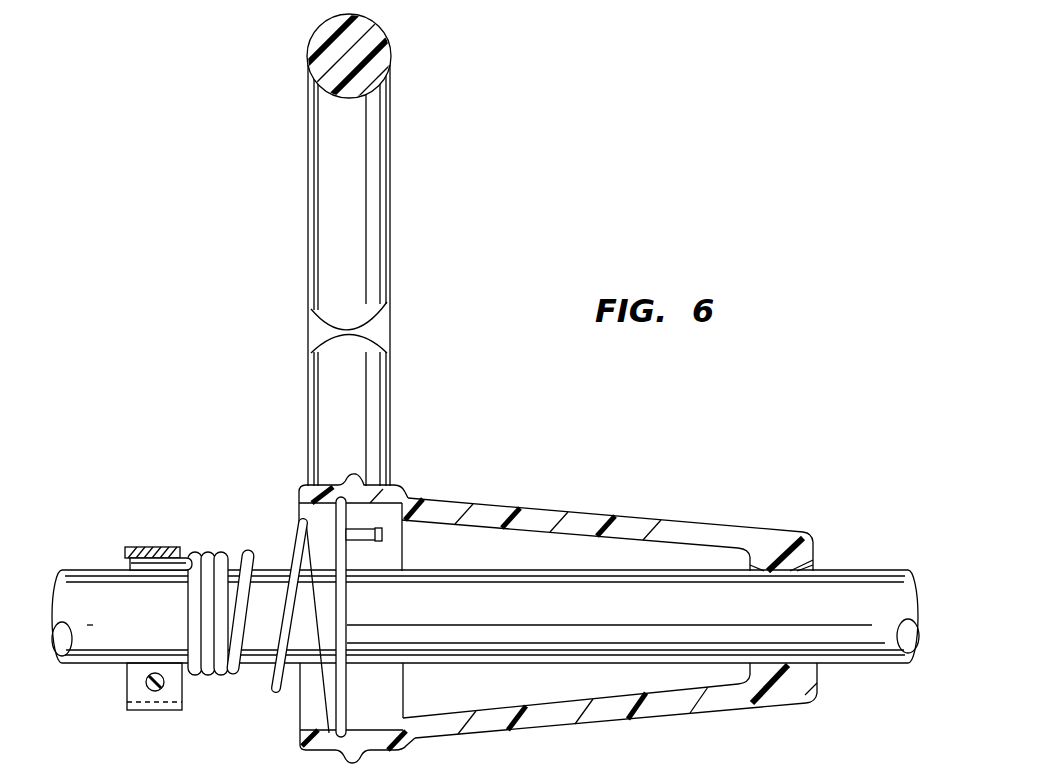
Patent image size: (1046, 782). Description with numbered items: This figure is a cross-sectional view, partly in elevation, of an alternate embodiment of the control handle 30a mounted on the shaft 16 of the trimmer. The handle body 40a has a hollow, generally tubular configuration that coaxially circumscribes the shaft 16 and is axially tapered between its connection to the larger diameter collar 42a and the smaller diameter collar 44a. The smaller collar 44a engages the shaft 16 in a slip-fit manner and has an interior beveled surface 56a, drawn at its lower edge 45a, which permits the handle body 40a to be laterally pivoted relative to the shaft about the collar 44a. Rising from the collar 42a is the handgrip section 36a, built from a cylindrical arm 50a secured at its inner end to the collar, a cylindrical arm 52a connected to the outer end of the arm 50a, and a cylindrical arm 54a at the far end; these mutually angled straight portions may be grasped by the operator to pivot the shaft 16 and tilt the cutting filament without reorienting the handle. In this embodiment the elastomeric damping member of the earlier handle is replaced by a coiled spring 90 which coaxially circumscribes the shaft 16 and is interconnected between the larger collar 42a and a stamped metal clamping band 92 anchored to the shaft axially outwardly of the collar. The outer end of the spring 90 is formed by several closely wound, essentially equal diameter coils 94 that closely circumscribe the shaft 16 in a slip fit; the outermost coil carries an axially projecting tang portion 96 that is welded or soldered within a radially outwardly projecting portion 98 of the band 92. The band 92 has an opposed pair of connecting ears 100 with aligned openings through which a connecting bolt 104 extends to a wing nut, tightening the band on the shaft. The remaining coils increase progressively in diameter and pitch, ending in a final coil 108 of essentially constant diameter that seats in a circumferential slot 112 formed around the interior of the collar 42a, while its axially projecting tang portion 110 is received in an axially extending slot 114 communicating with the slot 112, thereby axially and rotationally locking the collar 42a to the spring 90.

The shaft 16 is at (83, 570).
The control handle 30a is at (580, 588).
The handgrip section 36a is at (336, 243).
The handle body 40a is at (693, 514).
The larger diameter collar 42a is at (399, 497).
The smaller diameter collar 44a is at (785, 534).
The arm lower edge 45a is at (768, 572).
The cylindrical arm 50a is at (390, 441).
The cylindrical arm 52a is at (390, 215).
The cylindrical arm 54a is at (388, 28).
The interior beveled surface 56a is at (800, 572).
The coiled spring 90 is at (262, 703).
The clamping band 92 is at (170, 530).
The coils 94 is at (206, 552).
The tang portion 96 is at (146, 562).
The radially outwardly projecting portion 98 is at (128, 550).
The connecting ears 100 is at (128, 686).
The connecting bolt 104 is at (149, 691).
The final coil 108 is at (348, 612).
The tang portion 110 is at (357, 541).
The circumferential slot 112 is at (346, 714).
The axially extending slot 114 is at (383, 532).